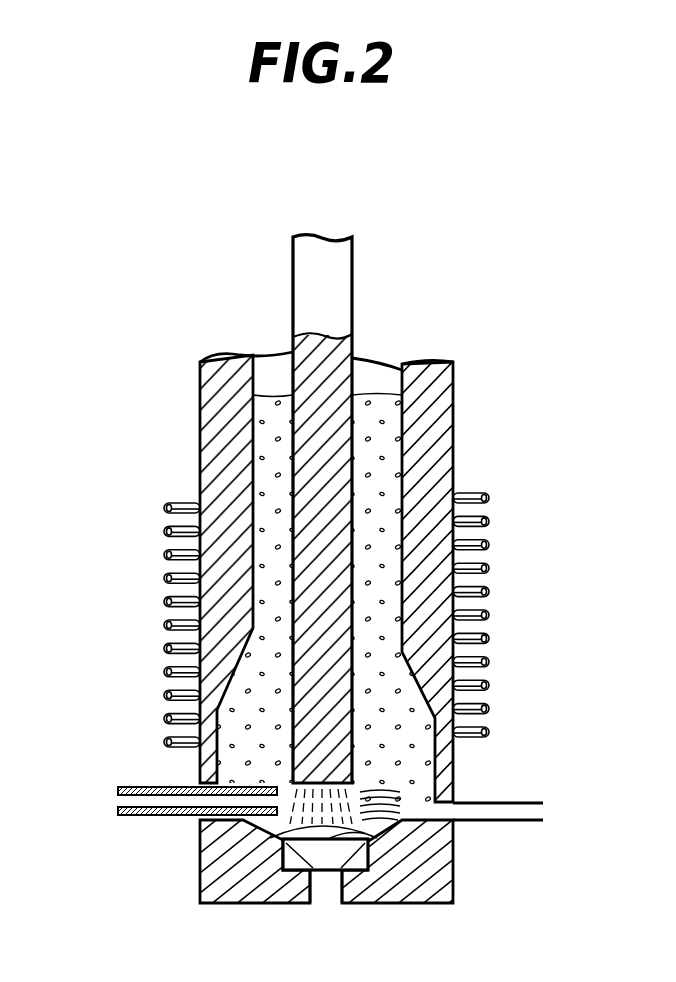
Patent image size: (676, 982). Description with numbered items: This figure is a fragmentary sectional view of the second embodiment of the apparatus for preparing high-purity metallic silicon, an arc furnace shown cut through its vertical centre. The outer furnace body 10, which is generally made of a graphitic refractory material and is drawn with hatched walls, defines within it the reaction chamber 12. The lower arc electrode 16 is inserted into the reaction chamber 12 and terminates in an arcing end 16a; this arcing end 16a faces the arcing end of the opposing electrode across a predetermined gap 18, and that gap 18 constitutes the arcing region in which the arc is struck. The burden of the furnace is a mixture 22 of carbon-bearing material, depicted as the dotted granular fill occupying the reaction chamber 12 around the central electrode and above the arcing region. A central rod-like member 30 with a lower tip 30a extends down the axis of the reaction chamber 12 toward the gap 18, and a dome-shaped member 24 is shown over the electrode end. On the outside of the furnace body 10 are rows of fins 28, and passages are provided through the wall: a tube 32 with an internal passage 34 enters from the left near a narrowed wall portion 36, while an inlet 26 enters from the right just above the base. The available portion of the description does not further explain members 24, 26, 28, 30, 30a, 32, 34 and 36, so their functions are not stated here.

The furnace body 10 is at (457, 407).
The reaction chamber 12 is at (383, 384).
The lower arc electrode 16 is at (325, 893).
The arcing end 16a is at (373, 838).
The gap 18 is at (250, 822).
The mixture 22 is at (380, 462).
The dome screen 24 is at (280, 837).
The gas inlet passage 26 is at (513, 814).
The cooling fins 28 is at (488, 594).
The plunger rod 30 is at (332, 298).
The rod tip 30a is at (337, 768).
The supply tube 32 is at (152, 816).
The tube passage 34 is at (130, 802).
The wall seal 36 is at (198, 772).